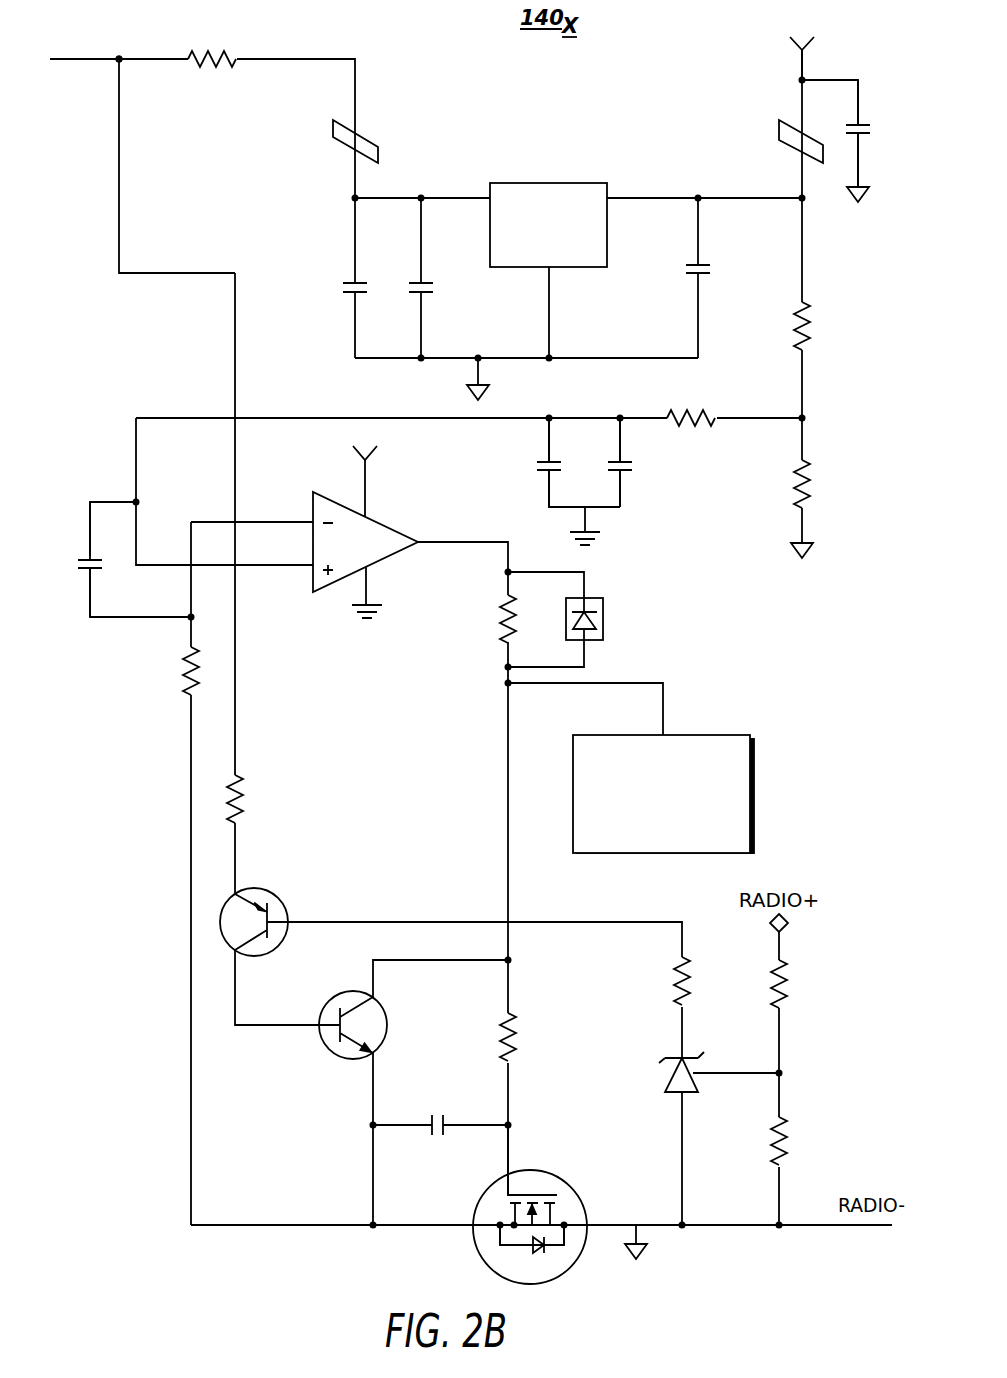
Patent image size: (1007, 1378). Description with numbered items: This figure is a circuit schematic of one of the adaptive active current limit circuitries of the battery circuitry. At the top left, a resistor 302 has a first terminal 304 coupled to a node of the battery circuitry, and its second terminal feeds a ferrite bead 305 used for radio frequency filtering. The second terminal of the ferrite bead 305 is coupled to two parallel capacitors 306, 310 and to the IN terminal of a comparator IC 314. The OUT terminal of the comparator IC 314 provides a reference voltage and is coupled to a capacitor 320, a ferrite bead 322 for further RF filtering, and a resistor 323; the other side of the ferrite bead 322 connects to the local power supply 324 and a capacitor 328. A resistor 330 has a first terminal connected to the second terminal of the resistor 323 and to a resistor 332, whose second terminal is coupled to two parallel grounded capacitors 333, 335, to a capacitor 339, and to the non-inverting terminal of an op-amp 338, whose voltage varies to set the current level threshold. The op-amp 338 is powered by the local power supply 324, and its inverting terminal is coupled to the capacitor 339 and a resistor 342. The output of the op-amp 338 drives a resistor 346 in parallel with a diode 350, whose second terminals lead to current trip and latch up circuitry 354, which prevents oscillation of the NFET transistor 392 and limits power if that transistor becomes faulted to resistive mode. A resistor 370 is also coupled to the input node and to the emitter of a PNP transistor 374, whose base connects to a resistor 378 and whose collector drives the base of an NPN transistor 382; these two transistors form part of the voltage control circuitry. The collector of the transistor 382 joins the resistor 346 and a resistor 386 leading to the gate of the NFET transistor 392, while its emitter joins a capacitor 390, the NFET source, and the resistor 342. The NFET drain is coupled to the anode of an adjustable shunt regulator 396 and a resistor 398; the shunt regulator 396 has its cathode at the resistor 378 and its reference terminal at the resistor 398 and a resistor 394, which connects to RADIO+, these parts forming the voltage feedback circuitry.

The resistor 302 is at (213, 55).
The first terminal 304 is at (156, 58).
The ferrite bead 305 is at (333, 128).
The capacitor 306 is at (353, 283).
The capacitor 310 is at (430, 294).
The comparator IC 314 is at (550, 183).
The capacitor 320 is at (692, 263).
The ferrite bead 322 is at (779, 128).
The resistor 323 is at (807, 332).
The local power supply 324 is at (798, 45).
The capacitor 328 is at (867, 126).
The resistor 330 is at (807, 497).
The resistor 332 is at (695, 423).
The capacitor 333 is at (627, 473).
The capacitor 335 is at (549, 462).
The op-amp 338 is at (383, 523).
The capacitor 339 is at (87, 558).
The resistor 342 is at (187, 669).
The resistor 346 is at (504, 632).
The diode 350 is at (604, 616).
The current trip and latch up circuitry 354 is at (753, 790).
The resistor 370 is at (240, 792).
The PNP bipolar junction transistor 374 is at (277, 894).
The resistor 378 is at (680, 985).
The NPN bipolar junction transistor 382 is at (389, 1024).
The resistor 386 is at (513, 1035).
The capacitor 390 is at (437, 1115).
The NFET transistor 392 is at (534, 1170).
The resistor 394 is at (783, 994).
The adjustable shunt regulator 396 is at (670, 1081).
The resistor 398 is at (783, 1154).